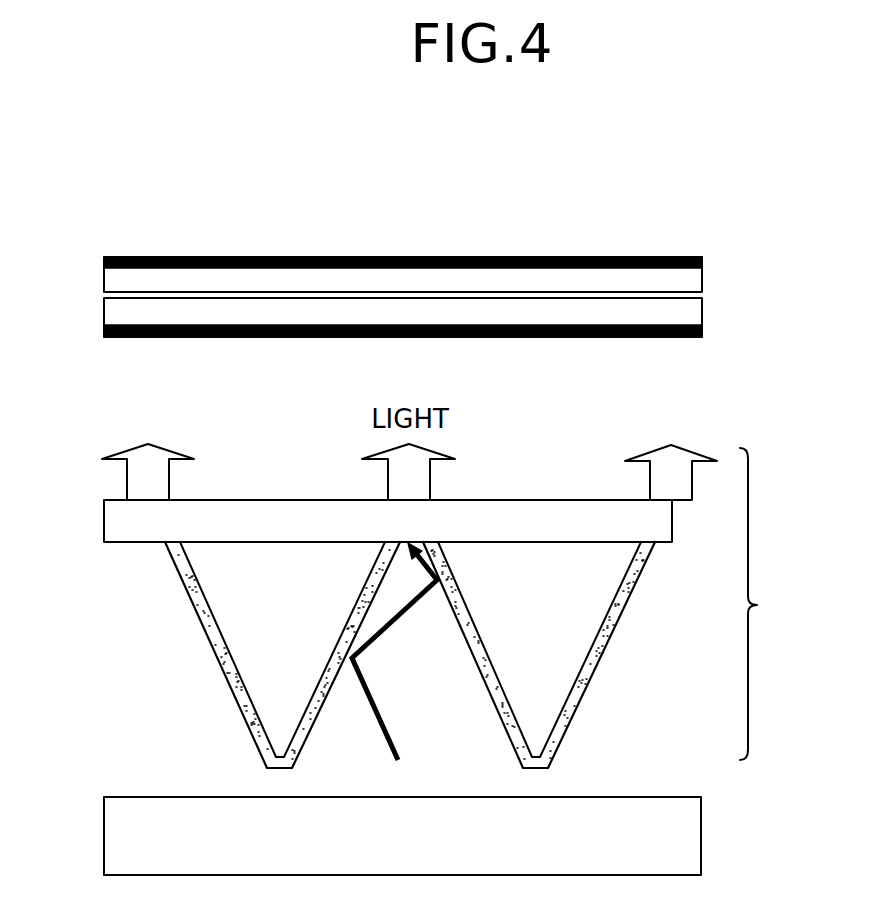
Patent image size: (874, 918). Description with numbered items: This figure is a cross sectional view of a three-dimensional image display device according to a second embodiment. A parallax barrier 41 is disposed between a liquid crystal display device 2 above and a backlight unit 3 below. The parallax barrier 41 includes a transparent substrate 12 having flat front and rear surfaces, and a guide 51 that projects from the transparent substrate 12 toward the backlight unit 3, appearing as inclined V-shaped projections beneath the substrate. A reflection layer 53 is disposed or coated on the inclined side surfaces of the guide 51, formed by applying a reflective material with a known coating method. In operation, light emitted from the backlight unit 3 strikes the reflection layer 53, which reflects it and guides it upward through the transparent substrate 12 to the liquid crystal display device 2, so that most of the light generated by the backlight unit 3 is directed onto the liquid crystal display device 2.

The liquid crystal display device 2 is at (740, 262).
The backlight unit 3 is at (740, 798).
The transparent substrate 12 is at (104, 518).
The parallax barrier 41 is at (774, 604).
The guide 51 is at (242, 633).
The reflection layer 53 is at (243, 712).